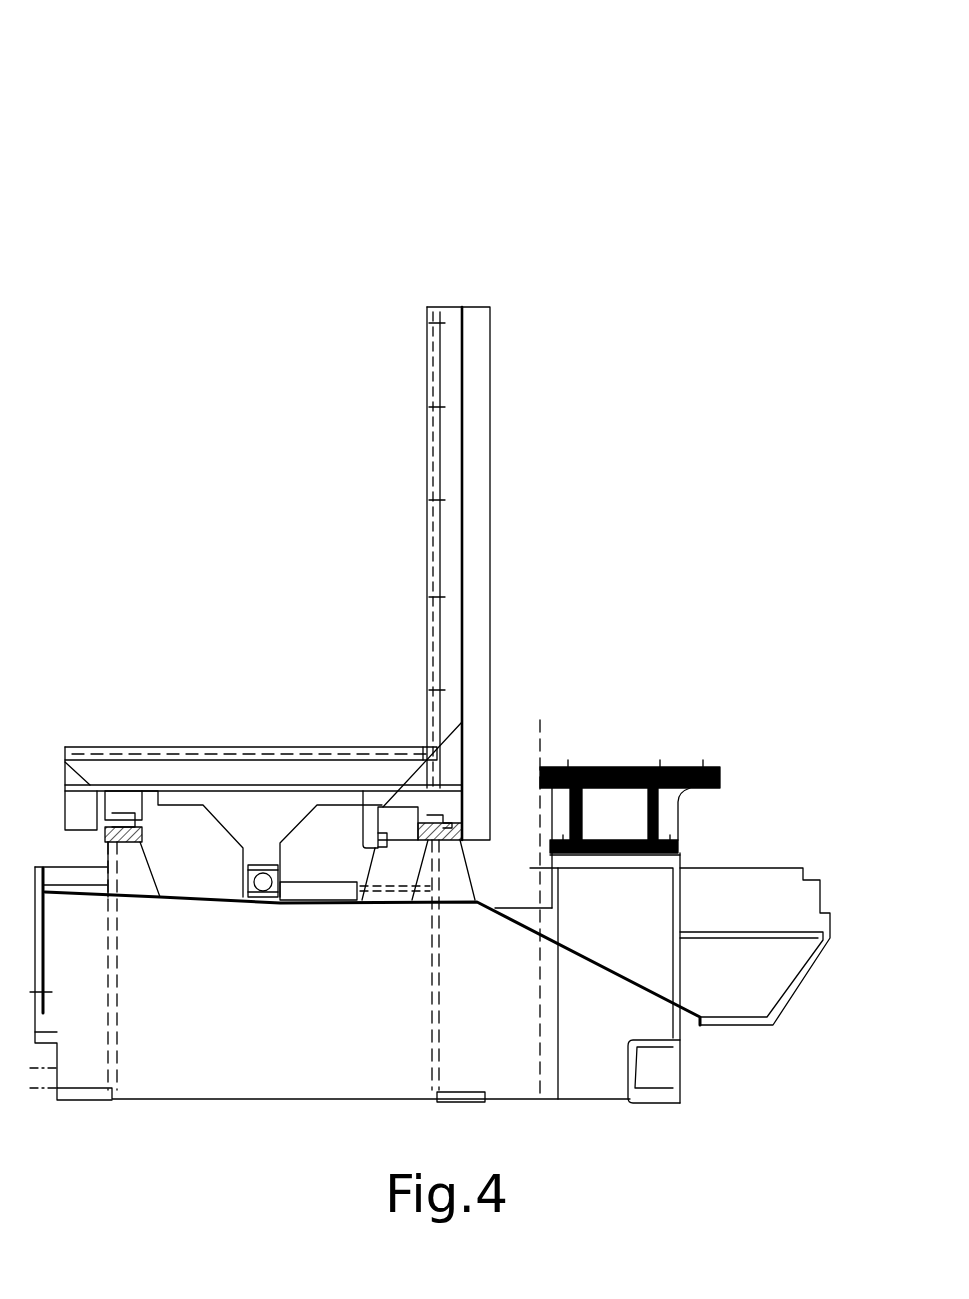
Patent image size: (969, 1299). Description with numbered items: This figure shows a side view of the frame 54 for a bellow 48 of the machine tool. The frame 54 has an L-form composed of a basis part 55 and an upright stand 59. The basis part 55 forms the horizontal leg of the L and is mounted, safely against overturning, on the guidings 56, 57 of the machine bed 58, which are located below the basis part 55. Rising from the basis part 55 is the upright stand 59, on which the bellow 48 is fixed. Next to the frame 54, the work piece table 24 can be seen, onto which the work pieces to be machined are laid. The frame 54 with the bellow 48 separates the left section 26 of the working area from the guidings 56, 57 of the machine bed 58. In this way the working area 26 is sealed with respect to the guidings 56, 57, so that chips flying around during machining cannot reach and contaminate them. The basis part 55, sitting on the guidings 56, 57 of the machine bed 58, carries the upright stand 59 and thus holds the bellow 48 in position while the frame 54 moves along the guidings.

The work piece table 24 is at (635, 765).
The left section 26 is at (664, 555).
The bellow 48 is at (472, 548).
The frame 54 is at (457, 196).
The basis part 55 is at (192, 768).
The guiding 56 is at (128, 845).
The guiding 57 is at (430, 843).
The base body 58 is at (275, 1050).
The upright stand 59 is at (445, 450).